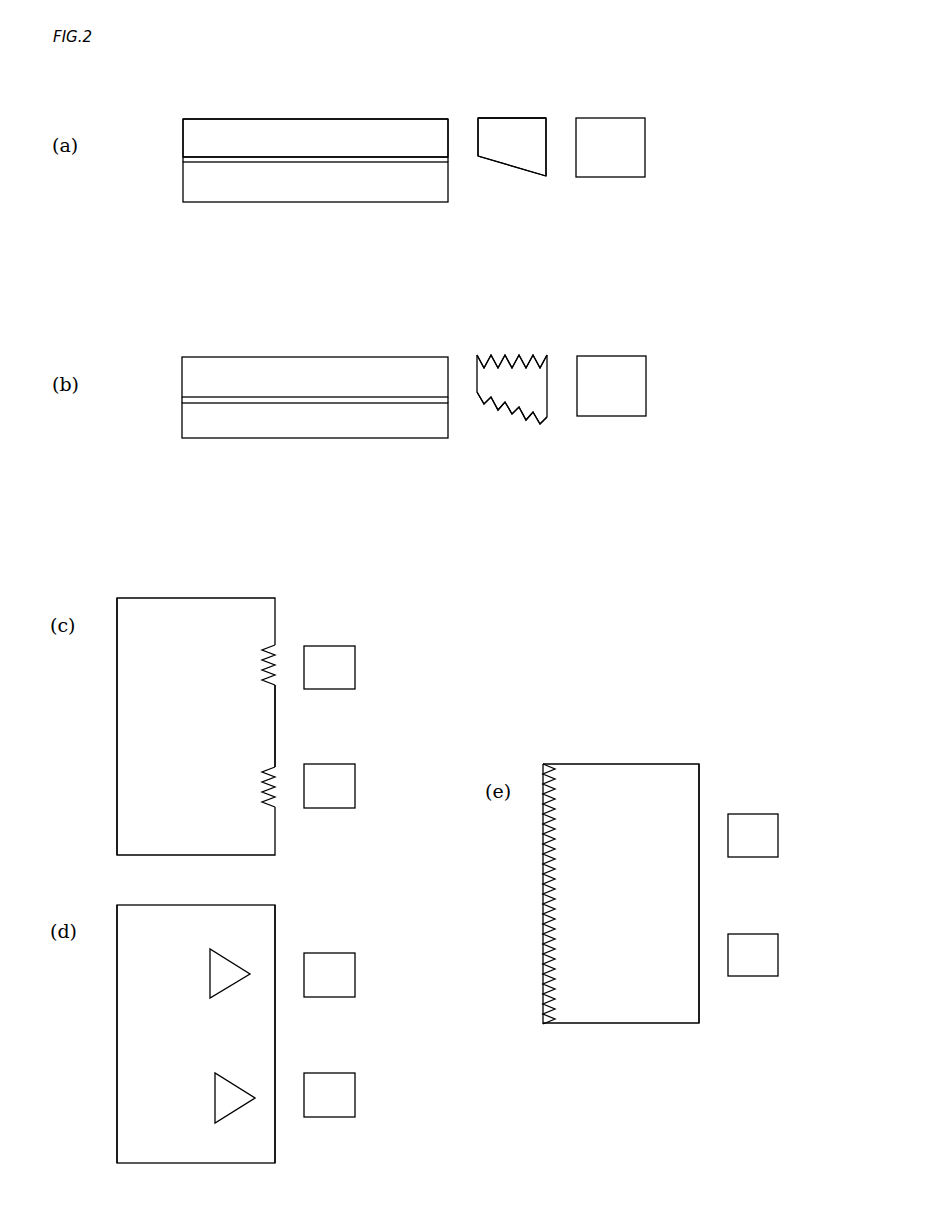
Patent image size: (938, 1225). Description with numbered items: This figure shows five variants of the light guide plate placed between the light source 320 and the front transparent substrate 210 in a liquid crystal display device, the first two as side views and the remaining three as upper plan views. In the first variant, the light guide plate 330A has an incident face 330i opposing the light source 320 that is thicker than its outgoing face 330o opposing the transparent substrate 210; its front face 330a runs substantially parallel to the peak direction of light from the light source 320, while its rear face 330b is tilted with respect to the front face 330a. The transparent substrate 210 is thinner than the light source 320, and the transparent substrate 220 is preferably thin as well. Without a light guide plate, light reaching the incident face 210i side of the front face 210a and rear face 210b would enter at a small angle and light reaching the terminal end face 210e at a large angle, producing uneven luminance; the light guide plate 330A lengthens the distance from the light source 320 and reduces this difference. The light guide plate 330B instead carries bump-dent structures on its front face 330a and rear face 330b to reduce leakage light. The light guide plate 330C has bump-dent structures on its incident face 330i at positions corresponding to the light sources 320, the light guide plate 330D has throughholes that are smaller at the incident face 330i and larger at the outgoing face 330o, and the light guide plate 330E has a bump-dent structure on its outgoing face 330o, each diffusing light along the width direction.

The transparent substrate 210 is at (387, 118).
The front face 210a is at (322, 118).
The rear face 210b is at (208, 158).
The terminal end face 210e is at (183, 141).
The incident face 210i is at (449, 130).
The transparent substrate 220 is at (402, 202).
The light source 320 is at (604, 177).
The light guide plate 330A is at (512, 166).
The light guide plate 330B is at (518, 397).
The light guide plate 330C is at (235, 617).
The light guide plate 330D is at (235, 925).
The light guide plate 330E is at (660, 785).
The front face 330a is at (535, 118).
The rear face 330b is at (529, 172).
The incident face 330i is at (547, 131).
The outgoing face 330o is at (478, 131).